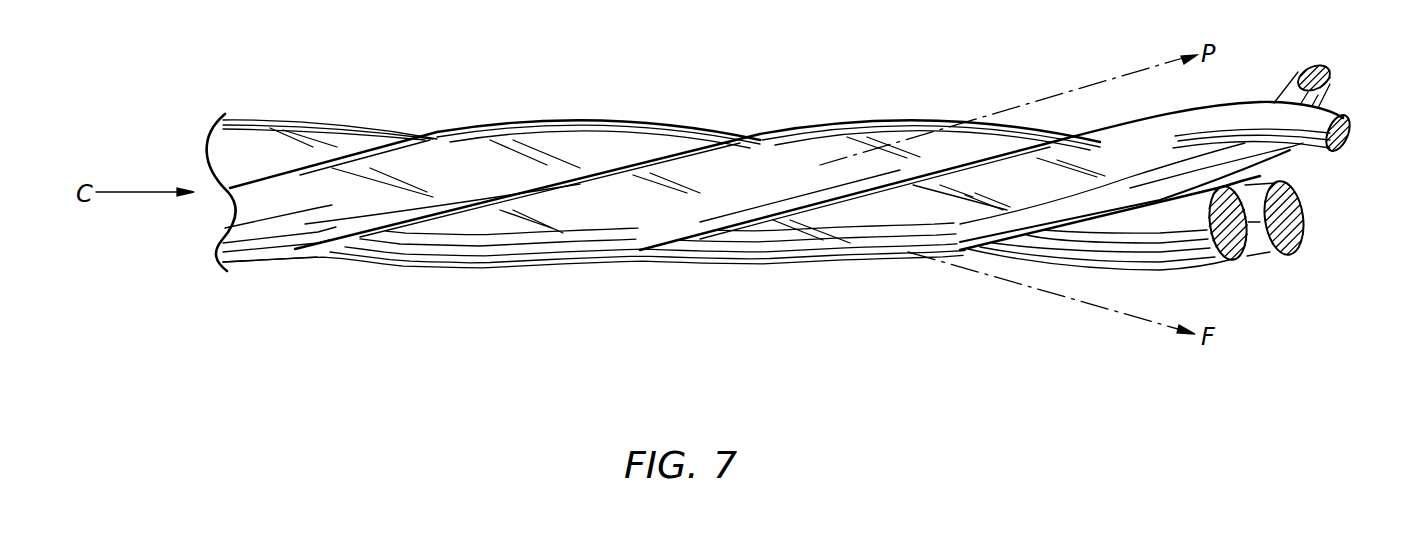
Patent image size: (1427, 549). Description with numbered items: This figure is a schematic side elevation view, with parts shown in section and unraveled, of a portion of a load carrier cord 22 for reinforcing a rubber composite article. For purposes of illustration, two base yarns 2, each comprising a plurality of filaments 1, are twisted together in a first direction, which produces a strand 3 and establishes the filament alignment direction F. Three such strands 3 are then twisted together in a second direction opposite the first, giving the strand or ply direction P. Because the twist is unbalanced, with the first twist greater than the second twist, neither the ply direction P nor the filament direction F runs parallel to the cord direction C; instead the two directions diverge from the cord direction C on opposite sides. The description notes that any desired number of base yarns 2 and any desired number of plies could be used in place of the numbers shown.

The load carrier cord 22 is at (652, 109).
The filaments 1 is at (533, 220).
The strand 3 is at (443, 255).
The base yarns 2 is at (1317, 70).